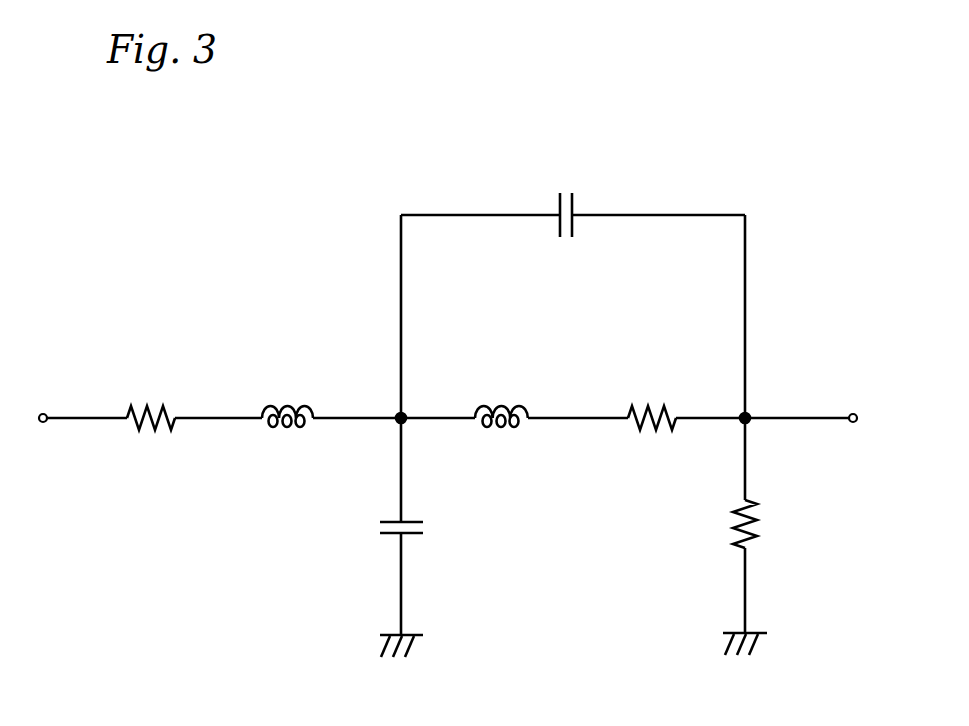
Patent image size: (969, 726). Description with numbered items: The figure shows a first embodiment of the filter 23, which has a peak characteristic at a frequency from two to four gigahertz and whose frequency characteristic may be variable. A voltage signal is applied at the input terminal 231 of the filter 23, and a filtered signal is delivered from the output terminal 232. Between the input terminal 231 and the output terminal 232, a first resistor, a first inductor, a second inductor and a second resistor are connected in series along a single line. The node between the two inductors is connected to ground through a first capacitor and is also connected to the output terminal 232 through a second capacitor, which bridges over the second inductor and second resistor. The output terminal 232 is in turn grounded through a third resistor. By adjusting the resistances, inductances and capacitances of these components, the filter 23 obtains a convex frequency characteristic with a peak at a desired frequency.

The filter 23 is at (808, 117).
The input terminal 231 is at (43, 412).
The output terminal 232 is at (853, 412).